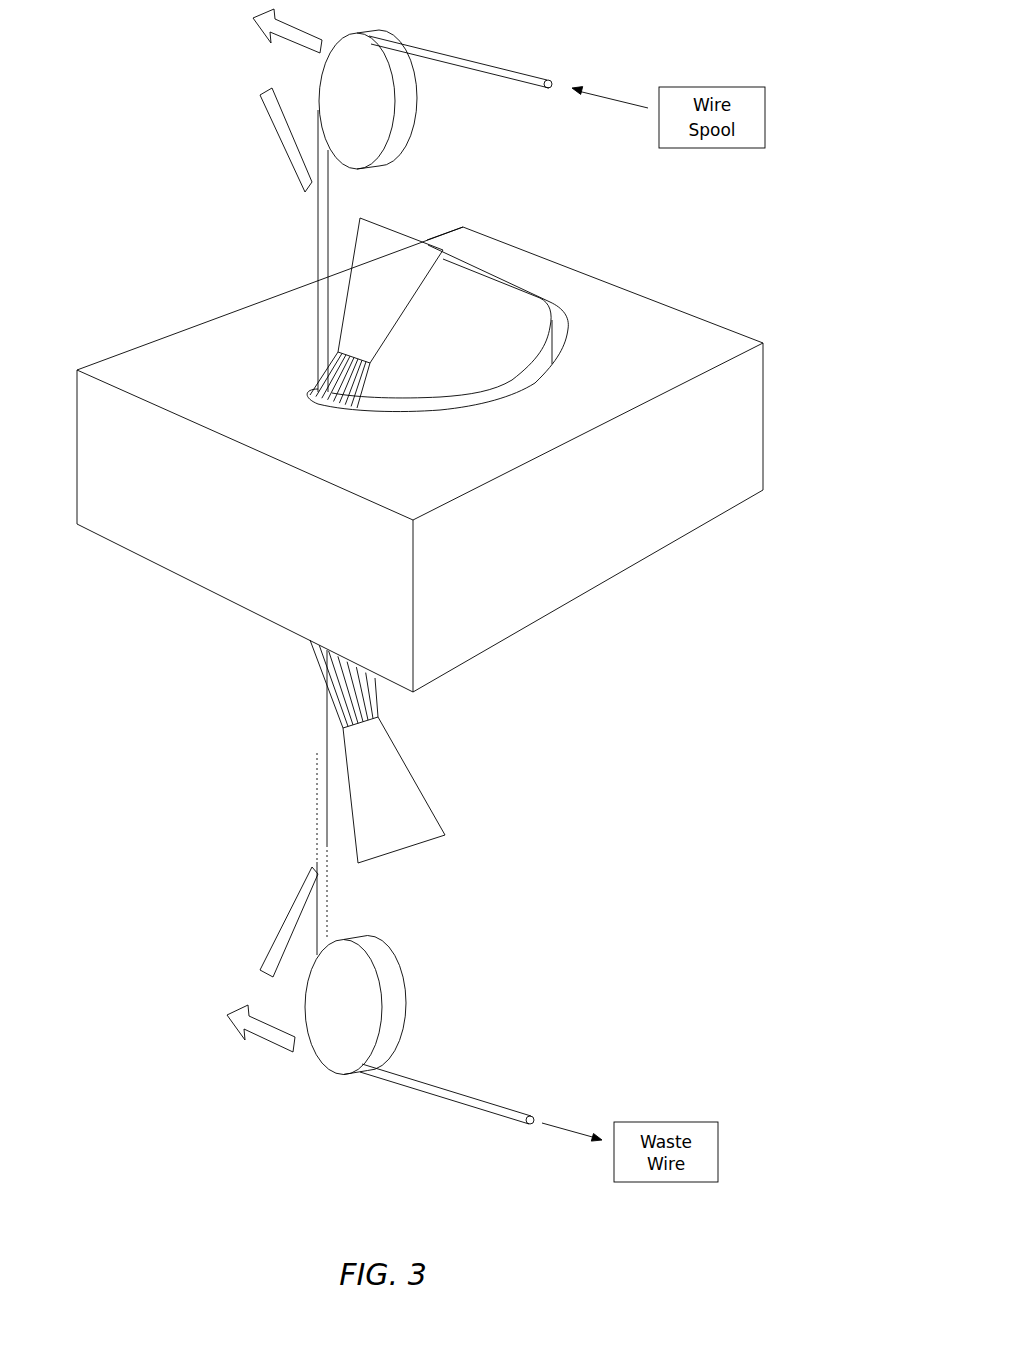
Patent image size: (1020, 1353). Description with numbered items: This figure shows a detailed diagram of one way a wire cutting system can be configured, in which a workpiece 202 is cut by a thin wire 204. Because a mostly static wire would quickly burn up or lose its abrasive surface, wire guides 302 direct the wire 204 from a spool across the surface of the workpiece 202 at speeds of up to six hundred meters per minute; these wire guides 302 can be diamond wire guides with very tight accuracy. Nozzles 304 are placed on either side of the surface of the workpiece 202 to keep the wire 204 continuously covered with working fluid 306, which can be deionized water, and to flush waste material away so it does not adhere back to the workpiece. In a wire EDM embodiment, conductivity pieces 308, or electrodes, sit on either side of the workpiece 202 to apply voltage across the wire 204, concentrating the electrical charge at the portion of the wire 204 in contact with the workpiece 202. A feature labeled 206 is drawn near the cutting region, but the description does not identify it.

The workpiece 202 is at (133, 480).
The wire 204 is at (315, 250).
The track 206 is at (428, 413).
The wire guides 302 is at (338, 115).
The nozzles 304 is at (359, 306).
The working fluid 306 is at (298, 371).
The conductivity pieces 308 is at (273, 128).